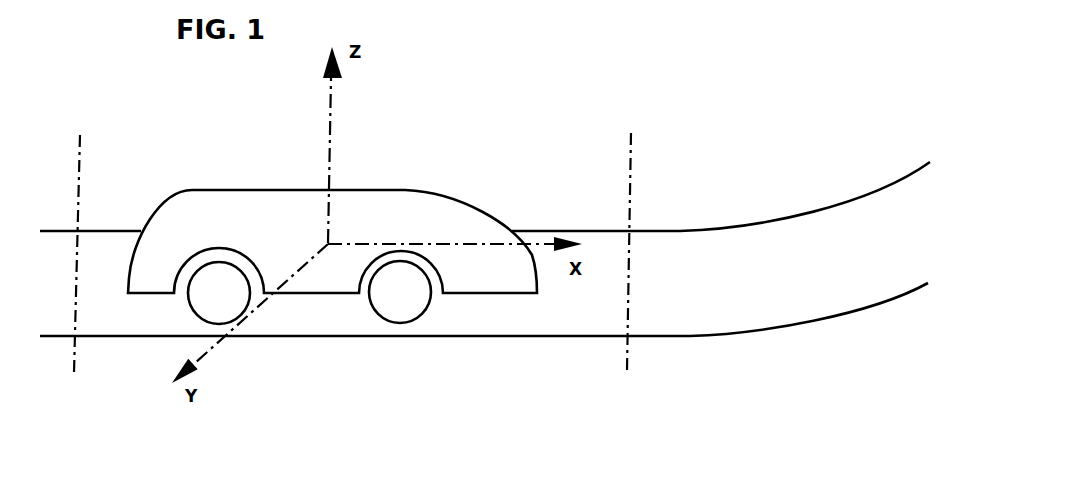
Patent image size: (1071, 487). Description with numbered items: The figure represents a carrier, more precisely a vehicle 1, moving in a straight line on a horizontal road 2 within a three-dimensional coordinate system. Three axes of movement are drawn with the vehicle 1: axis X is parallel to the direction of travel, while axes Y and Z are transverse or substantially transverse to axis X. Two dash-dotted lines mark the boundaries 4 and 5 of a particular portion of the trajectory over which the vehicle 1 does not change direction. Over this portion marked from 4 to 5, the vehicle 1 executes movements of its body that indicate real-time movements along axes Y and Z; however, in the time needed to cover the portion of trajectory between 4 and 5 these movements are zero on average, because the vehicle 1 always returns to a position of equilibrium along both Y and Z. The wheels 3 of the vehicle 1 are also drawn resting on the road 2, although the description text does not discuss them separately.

The vehicle 1 is at (468, 204).
The road 2 is at (668, 302).
The wheel 3 is at (402, 323).
The start of trajectory portion 4 is at (82, 173).
The end of trajectory portion 5 is at (633, 170).